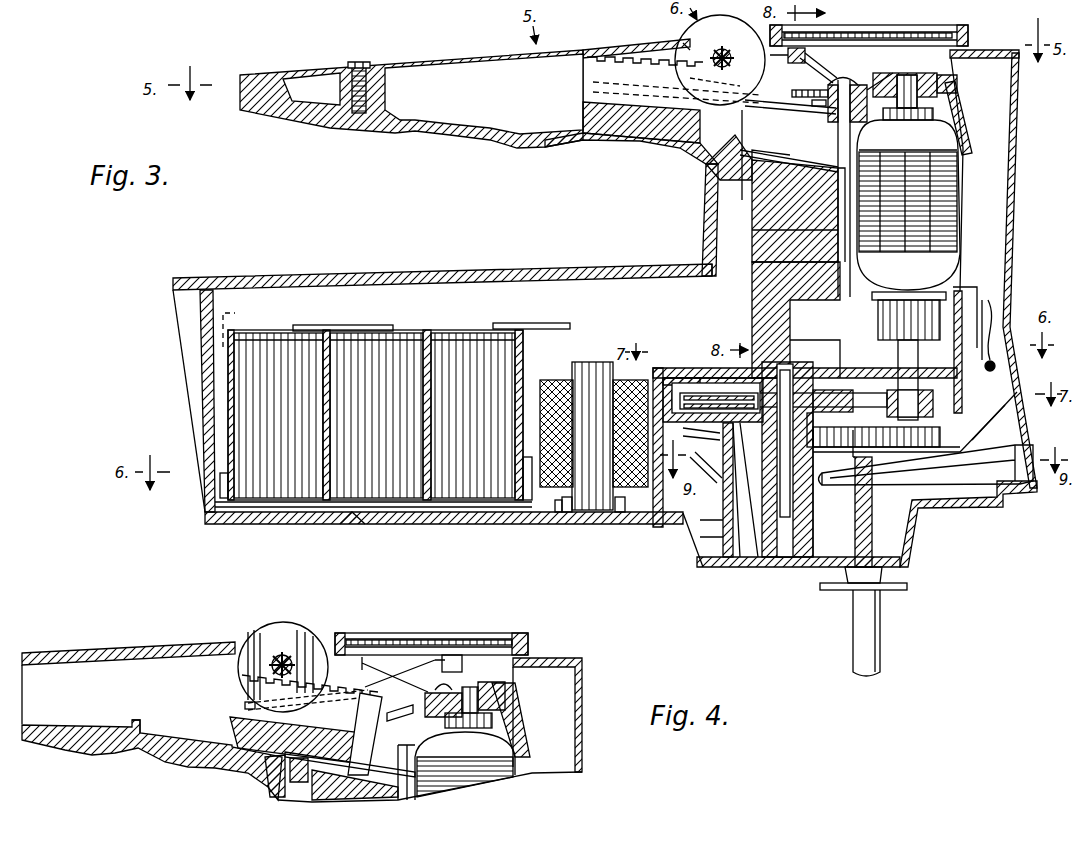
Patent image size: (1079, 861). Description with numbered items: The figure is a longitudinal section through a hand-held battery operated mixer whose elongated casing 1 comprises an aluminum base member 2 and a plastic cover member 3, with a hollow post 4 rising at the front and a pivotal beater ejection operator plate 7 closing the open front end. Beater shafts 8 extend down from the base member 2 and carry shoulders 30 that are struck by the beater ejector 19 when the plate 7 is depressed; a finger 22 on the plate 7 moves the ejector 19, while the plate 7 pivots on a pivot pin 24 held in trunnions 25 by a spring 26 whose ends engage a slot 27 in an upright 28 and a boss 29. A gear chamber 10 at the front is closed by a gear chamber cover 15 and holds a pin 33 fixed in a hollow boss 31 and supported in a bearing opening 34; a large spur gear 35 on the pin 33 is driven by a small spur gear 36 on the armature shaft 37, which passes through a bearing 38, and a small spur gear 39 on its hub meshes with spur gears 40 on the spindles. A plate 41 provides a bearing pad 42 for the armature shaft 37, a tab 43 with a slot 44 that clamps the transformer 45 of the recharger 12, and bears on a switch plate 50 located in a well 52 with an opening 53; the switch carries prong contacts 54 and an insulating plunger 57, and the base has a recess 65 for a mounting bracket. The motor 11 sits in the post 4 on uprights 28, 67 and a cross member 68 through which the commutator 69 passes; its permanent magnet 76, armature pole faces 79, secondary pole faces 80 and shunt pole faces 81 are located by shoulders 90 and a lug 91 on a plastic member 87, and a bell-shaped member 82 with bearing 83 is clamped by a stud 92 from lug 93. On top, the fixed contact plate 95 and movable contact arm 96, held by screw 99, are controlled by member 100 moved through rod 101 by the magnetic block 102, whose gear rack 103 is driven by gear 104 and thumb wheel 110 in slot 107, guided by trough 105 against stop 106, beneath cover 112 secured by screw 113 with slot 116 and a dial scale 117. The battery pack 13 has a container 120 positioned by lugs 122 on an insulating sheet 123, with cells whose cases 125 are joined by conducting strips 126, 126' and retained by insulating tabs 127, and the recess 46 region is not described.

In FIG. 3, the casing 1 is at (472, 270).
In FIG. 3, the base member 2 is at (462, 535).
In FIG. 3, the cover member 3 is at (306, 276).
In FIG. 3, the hollow post 4 is at (700, 218).
In FIG. 3, the beater ejection operator plate 7 is at (1018, 208).
In FIG. 4, the beater ejection operator plate 7 is at (586, 738).
In FIG. 3, the beater shafts 8 is at (880, 632).
In FIG. 3, the gear chamber 10 is at (688, 368).
In FIG. 3, the motor 11 is at (970, 172).
In FIG. 3, the recharger 12 is at (635, 505).
In FIG. 3, the battery pack 13 is at (306, 326).
In FIG. 3, the gear chamber cover 15 is at (668, 368).
In FIG. 3, the beater ejector 19 is at (905, 535).
In FIG. 3, the finger 22 is at (950, 485).
In FIG. 3, the pivot pin 24 is at (998, 367).
In FIG. 3, the trunnions 25 is at (984, 373).
In FIG. 3, the spring 26 is at (982, 300).
In FIG. 3, the slot 27 is at (966, 275).
In FIG. 3, the upright 28 is at (1000, 302).
In FIG. 3, the boss 29 is at (1005, 318).
In FIG. 3, the shoulders 30 is at (888, 594).
In FIG. 3, the hollow boss 31 is at (800, 560).
In FIG. 3, the shaft or pin 33 is at (785, 560).
In FIG. 3, the bearing opening 34 is at (760, 350).
In FIG. 3, the large spur gear 35 is at (713, 398).
In FIG. 3, the small spur gear 36 is at (934, 402).
In FIG. 3, the armature shaft 37 is at (893, 362).
In FIG. 3, the bearing 38 is at (880, 386).
In FIG. 3, the small spur gear 39 is at (834, 493).
In FIG. 3, the spur gears 40 is at (940, 442).
In FIG. 3, the plate 41 is at (968, 448).
In FIG. 3, the bearing pad 42 is at (873, 430).
In FIG. 3, the tab 43 is at (548, 380).
In FIG. 3, the slot 44 is at (590, 362).
In FIG. 3, the transformer 45 is at (595, 362).
In FIG. 3, the foot 46 is at (560, 512).
In FIG. 3, the switch plate 50 is at (718, 470).
In FIG. 3, the well or recess 52 is at (840, 590).
In FIG. 3, the opening 53 is at (692, 527).
In FIG. 3, the prong contacts 54 is at (705, 560).
In FIG. 3, the insulating plunger 57 is at (728, 518).
In FIG. 3, the recess 65 is at (355, 527).
In FIG. 3, the rear upright portion 67 is at (752, 287).
In FIG. 3, the cross member 68 is at (817, 277).
In FIG. 3, the commutator 69 is at (895, 310).
In FIG. 3, the permanent magnet 76 is at (795, 211).
In FIG. 3, the armature pole faces 79 is at (920, 160).
In FIG. 3, the secondary pole faces 80 is at (805, 103).
In FIG. 4, the secondary pole faces 80 is at (395, 740).
In FIG. 3, the magnetic shunt pole faces 81 is at (780, 152).
In FIG. 3, the bell-shaped end member 82 is at (961, 112).
In FIG. 4, the bell-shaped end member 82 is at (515, 710).
In FIG. 3, the bearing 83 is at (893, 77).
In FIG. 3, the plastic member 87 is at (712, 190).
In FIG. 4, the plastic member 87 is at (262, 781).
In FIG. 3, the shoulders 90 is at (833, 167).
In FIG. 3, the lug 91 is at (763, 160).
In FIG. 4, the lug 91 is at (282, 799).
In FIG. 3, the stud 92 is at (835, 218).
In FIG. 3, the lug 93 is at (830, 107).
In FIG. 3, the fixed contact plate 95 is at (926, 34).
In FIG. 4, the fixed contact plate 95 is at (518, 634).
In FIG. 3, the movable contact arm 96 is at (818, 66).
In FIG. 4, the movable contact arm 96 is at (320, 723).
In FIG. 4, the screw 99 is at (455, 687).
In FIG. 3, the member 100 is at (800, 62).
In FIG. 4, the member 100 is at (452, 655).
In FIG. 3, the rod 101 is at (640, 92).
In FIG. 4, the rod 101 is at (397, 667).
In FIG. 3, the block 102 is at (637, 76).
In FIG. 4, the block 102 is at (240, 728).
In FIG. 3, the gear rack 103 is at (622, 46).
In FIG. 3, the gear 104 is at (720, 60).
In FIG. 4, the gear 104 is at (300, 650).
In FIG. 3, the guide trough 105 is at (594, 158).
In FIG. 4, the guide trough 105 is at (175, 740).
In FIG. 3, the stop 106 is at (636, 118).
In FIG. 4, the stop 106 is at (132, 726).
In FIG. 4, the slot 107 is at (245, 705).
In FIG. 4, the thumb operated wheel 110 is at (246, 640).
In FIG. 3, the cover 112 is at (460, 50).
In FIG. 4, the cover 112 is at (125, 650).
In FIG. 3, the screw 113 is at (362, 64).
In FIG. 3, the slot 116 is at (685, 42).
In FIG. 3, the dial scale member 117 is at (897, 33).
In FIG. 3, the container 120 is at (200, 415).
In FIG. 3, the lugs 122 is at (224, 488).
In FIG. 3, the insulating sheet 123 is at (290, 520).
In FIG. 3, the outer metallic case 125 is at (245, 388).
In FIG. 3, the conducting strips 126 is at (343, 310).
In FIG. 3, the conducting strips 126' is at (531, 309).
In FIG. 3, the insulating tabs 127 is at (315, 340).